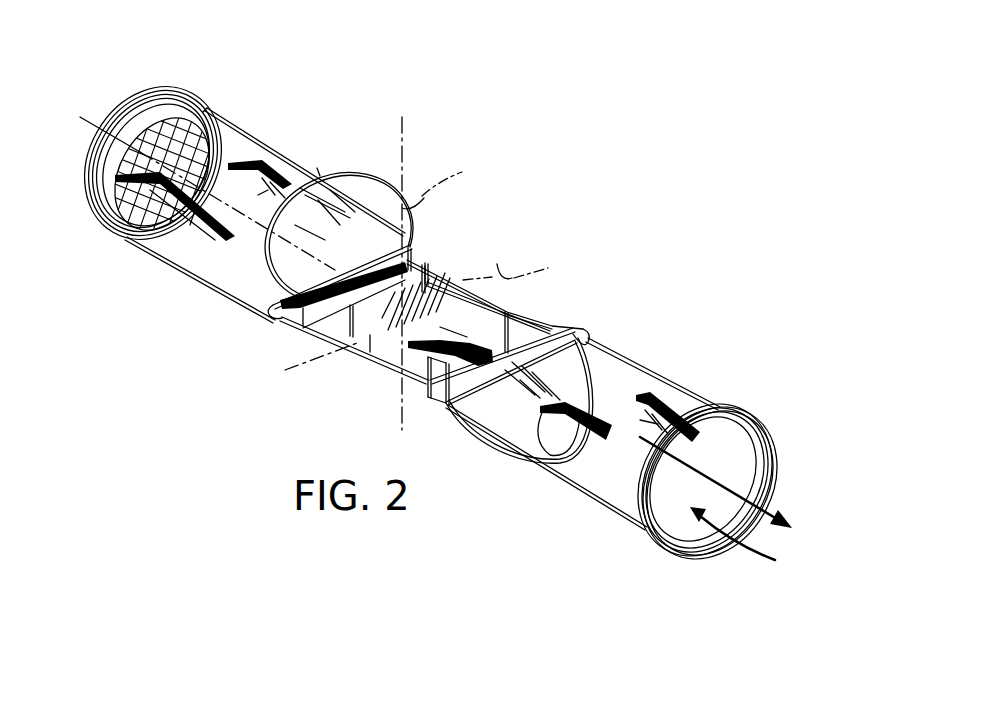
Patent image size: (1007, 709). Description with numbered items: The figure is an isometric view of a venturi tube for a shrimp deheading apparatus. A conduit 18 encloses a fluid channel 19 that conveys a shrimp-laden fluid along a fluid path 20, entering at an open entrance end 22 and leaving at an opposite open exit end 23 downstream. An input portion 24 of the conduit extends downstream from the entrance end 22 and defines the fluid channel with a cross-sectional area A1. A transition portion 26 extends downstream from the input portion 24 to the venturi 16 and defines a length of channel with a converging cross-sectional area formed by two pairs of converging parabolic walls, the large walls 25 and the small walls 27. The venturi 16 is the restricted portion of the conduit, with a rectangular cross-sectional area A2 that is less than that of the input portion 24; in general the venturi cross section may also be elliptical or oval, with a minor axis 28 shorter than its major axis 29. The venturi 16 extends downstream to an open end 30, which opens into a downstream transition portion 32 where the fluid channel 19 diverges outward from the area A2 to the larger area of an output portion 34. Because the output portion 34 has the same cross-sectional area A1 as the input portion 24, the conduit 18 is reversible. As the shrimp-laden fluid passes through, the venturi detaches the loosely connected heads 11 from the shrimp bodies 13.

The heads 11 is at (657, 397).
The shrimp bodies 13 is at (580, 437).
The venturi 16 is at (374, 357).
The conduit 18 is at (394, 126).
The fluid channel 19 is at (744, 541).
The fluid path 20 is at (767, 497).
The entrance end 22 is at (142, 92).
The exit end 23 is at (767, 450).
The input portion 24 is at (263, 142).
The large walls 25 is at (353, 207).
The transition portion 26 is at (260, 283).
The small walls 27 is at (290, 317).
The minor axis 28 is at (447, 185).
The major axis 29 is at (519, 263).
The open end 30 is at (423, 385).
The downstream transition portion 32 is at (545, 325).
The output portion 34 is at (623, 503).
The cross-sectional area A1 is at (127, 213).
The cross-sectional area A2 is at (437, 292).